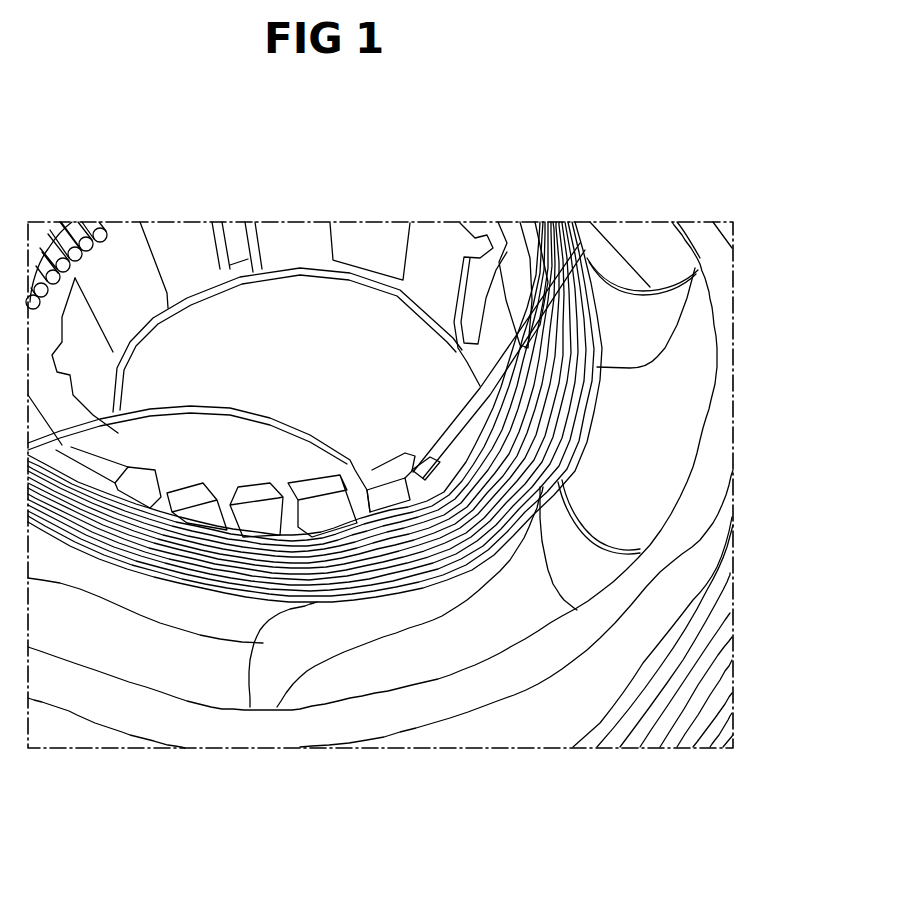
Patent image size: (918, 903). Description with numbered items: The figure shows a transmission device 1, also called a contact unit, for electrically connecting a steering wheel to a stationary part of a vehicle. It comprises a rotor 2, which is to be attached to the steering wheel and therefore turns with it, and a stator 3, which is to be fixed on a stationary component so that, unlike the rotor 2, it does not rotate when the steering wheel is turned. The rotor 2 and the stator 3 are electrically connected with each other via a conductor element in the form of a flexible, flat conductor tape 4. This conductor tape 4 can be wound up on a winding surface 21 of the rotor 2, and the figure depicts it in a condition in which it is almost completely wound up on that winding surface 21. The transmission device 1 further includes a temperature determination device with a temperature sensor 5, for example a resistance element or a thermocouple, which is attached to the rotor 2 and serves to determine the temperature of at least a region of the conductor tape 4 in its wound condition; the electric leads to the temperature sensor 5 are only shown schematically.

The transmission device 1 is at (750, 247).
The rotor 2 is at (412, 453).
The winding surface 21 is at (457, 463).
The stator 3 is at (697, 627).
The conductor tape 4 is at (582, 393).
The temperature sensor 5 is at (563, 482).